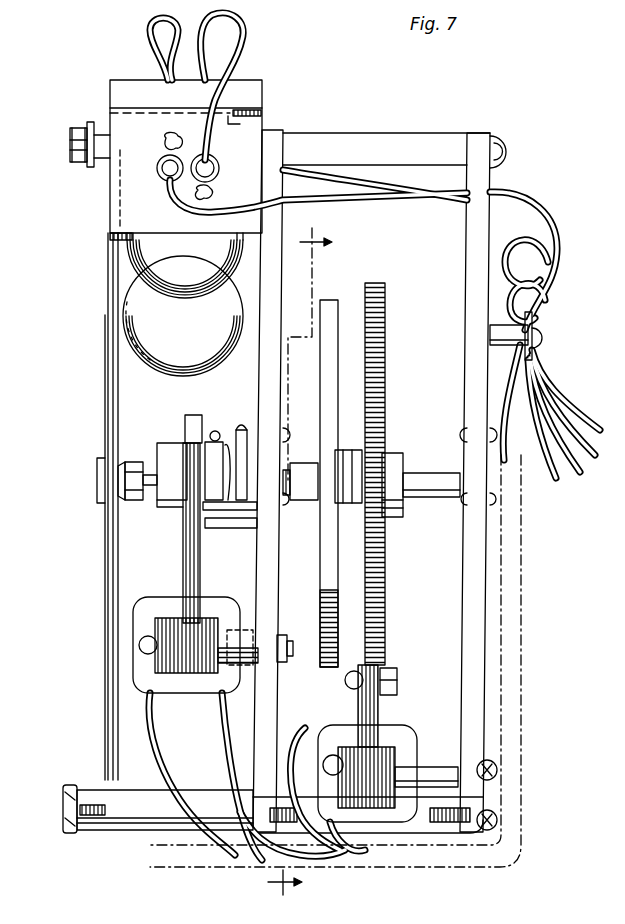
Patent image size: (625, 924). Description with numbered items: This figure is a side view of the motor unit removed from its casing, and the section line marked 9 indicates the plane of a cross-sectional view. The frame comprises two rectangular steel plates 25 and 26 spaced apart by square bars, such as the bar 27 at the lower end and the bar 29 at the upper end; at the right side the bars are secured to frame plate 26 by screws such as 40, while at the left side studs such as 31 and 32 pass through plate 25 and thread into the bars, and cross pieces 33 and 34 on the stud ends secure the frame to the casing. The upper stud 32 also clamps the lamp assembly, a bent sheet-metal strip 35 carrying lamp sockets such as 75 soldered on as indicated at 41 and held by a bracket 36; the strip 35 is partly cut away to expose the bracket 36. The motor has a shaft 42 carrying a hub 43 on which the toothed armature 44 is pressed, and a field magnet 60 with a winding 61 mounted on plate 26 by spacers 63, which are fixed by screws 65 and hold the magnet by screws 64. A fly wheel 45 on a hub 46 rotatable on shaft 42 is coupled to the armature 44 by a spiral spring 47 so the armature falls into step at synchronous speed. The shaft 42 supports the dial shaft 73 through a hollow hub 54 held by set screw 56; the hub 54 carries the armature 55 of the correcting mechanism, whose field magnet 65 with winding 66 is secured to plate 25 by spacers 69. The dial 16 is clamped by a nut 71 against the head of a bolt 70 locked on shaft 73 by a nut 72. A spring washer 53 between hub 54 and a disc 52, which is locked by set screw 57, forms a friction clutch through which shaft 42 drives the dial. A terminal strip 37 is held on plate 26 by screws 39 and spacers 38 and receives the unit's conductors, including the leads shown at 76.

The section line 9- 9 is at (300, 564).
The dial 16 is at (105, 392).
The frame plate 25 is at (276, 142).
The frame plate 26 is at (464, 663).
The square bar 27 is at (432, 830).
The square bar 29 is at (410, 134).
The stud 31 is at (160, 826).
The stud 32 is at (100, 126).
The cross piece 33 is at (63, 790).
The cross piece 34 is at (88, 168).
The strip 35 is at (250, 88).
The bracket 36 is at (262, 122).
The terminal strip 37 is at (535, 320).
The spacer 38 is at (518, 336).
The screw 39 is at (540, 345).
The screw 40 is at (502, 148).
The solder 41 is at (165, 142).
The shaft 42 is at (430, 473).
The hub 43 is at (403, 510).
The toothed armature 44 is at (386, 545).
The fly wheel 45 is at (330, 300).
The hub 46 is at (305, 502).
The spiral spring 47 is at (350, 505).
The disc 52 is at (228, 444).
The spring washer 53 is at (236, 512).
The hollow hub 54 is at (170, 445).
The armature 55 is at (193, 415).
The set screw 56 is at (215, 431).
The set screw 57 is at (243, 426).
The field magnet 60 is at (380, 635).
The winding 61 is at (395, 732).
The spacer 63 is at (432, 768).
The screw 64 is at (332, 755).
The screw / field magnet 65 is at (183, 563).
The winding 66 is at (187, 680).
The spacer 69 is at (240, 630).
The bolt 70 is at (95, 485).
The nut 71 is at (122, 462).
The nut 72 is at (136, 500).
The dial shaft 73 is at (152, 486).
The lamp socket 75 is at (140, 252).
The coil 76 is at (162, 352).